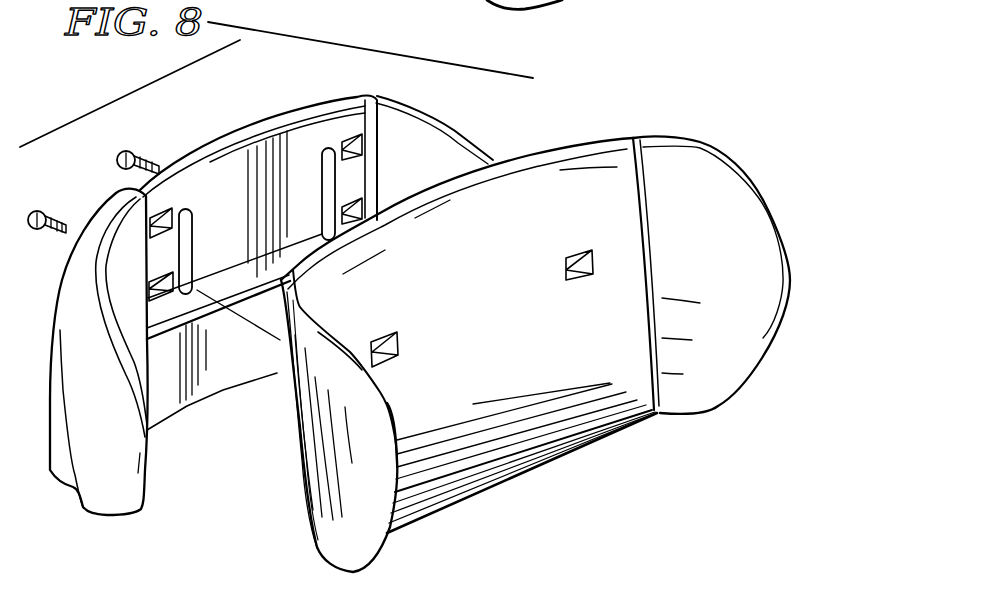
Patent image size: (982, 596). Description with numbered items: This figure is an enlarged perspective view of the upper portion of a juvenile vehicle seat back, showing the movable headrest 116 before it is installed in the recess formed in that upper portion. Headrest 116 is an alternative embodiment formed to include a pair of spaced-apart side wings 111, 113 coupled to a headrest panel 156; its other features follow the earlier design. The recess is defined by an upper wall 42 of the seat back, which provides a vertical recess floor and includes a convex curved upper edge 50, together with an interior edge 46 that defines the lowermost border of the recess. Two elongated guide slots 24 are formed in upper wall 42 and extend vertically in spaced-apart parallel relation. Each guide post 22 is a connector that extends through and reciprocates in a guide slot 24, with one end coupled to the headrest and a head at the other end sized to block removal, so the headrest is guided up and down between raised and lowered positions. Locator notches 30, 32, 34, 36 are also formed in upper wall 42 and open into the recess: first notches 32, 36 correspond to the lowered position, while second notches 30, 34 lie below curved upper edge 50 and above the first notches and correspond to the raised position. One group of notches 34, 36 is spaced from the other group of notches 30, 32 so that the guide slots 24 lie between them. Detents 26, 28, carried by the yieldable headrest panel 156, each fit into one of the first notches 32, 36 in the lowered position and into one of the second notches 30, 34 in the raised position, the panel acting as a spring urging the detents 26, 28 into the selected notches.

The guide post 22 is at (155, 143).
The guide slot 24 is at (323, 187).
The detent 26 is at (404, 326).
The detent 28 is at (555, 268).
The second notch 30 is at (163, 212).
The first notch 32 is at (160, 287).
The second notch 34 is at (345, 135).
The first notch 36 is at (362, 198).
The upper wall 42 is at (236, 170).
The interior edge 46 is at (183, 340).
The convex curved upper edge 50 is at (293, 110).
The side wing 111 is at (363, 425).
The side wing 113 is at (725, 183).
The headrest 116 is at (634, 126).
The headrest panel 156 is at (607, 421).